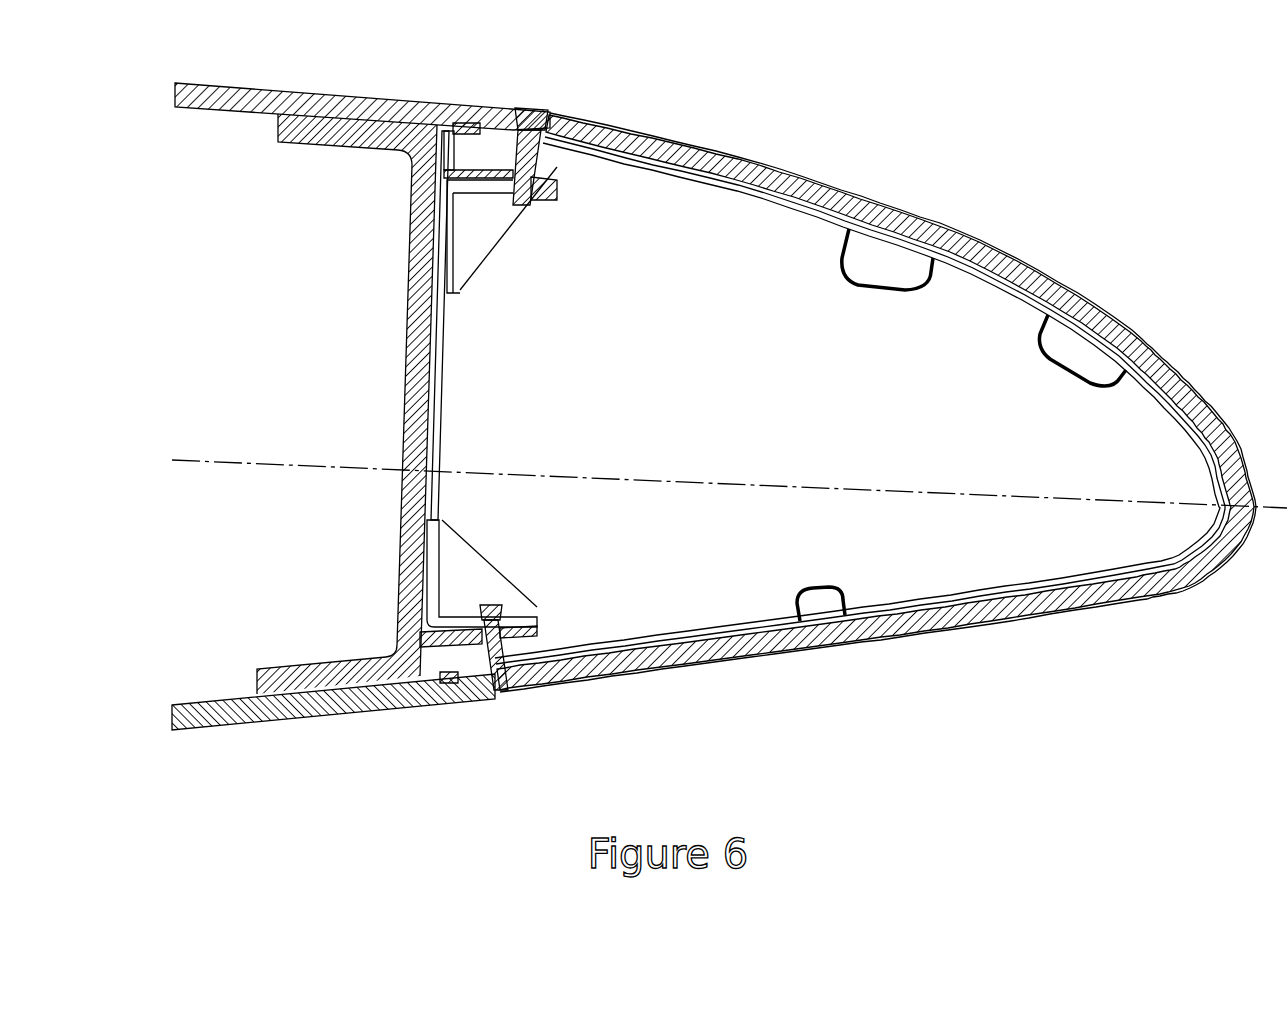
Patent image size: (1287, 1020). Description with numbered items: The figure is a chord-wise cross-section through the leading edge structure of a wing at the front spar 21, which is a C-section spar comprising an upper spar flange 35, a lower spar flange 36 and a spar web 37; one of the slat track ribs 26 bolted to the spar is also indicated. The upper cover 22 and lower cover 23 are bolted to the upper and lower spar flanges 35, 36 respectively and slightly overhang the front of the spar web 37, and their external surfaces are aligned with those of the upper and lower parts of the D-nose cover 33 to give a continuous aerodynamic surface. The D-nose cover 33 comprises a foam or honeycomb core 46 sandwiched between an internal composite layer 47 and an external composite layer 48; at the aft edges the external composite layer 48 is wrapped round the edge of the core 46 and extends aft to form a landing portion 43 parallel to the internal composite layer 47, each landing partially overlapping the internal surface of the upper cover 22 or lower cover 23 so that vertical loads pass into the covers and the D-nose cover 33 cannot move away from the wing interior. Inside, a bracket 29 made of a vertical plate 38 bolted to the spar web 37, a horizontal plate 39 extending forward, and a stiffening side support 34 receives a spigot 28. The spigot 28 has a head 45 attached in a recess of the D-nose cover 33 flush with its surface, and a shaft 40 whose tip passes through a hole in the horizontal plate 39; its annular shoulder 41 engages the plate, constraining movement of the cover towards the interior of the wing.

The front spar 21 is at (272, 348).
The upper cover 22 is at (280, 92).
The lower cover 23 is at (272, 722).
The slat track rib 26 is at (813, 215).
The spigot 28 is at (544, 167).
The bracket 29 is at (515, 582).
The D-nose cover 33 is at (875, 402).
The stiffening side support 34 is at (510, 582).
The upper spar flange 35 is at (332, 128).
The lower spar flange 36 is at (295, 667).
The spar web 37 is at (332, 404).
The vertical plate 38 is at (442, 520).
The horizontal plate 39 is at (537, 612).
The shaft 40 is at (530, 158).
The annular shoulder 41 is at (528, 205).
The landing portion 43 is at (467, 125).
The head 45 is at (548, 114).
The core 46 is at (893, 217).
The internal composite layer 47 is at (969, 274).
The external composite layer 48 is at (973, 236).